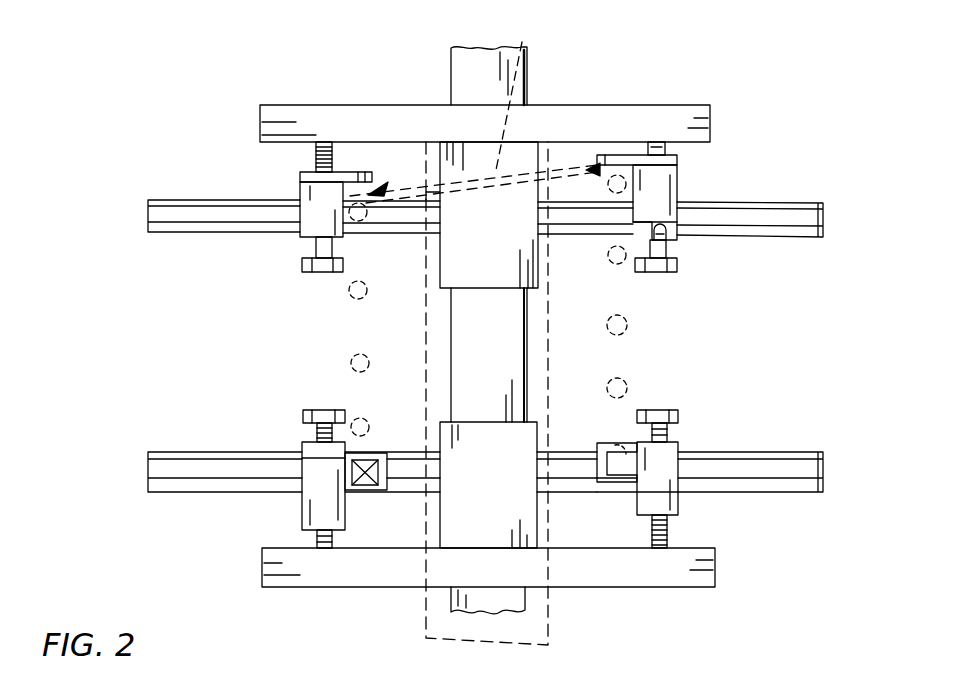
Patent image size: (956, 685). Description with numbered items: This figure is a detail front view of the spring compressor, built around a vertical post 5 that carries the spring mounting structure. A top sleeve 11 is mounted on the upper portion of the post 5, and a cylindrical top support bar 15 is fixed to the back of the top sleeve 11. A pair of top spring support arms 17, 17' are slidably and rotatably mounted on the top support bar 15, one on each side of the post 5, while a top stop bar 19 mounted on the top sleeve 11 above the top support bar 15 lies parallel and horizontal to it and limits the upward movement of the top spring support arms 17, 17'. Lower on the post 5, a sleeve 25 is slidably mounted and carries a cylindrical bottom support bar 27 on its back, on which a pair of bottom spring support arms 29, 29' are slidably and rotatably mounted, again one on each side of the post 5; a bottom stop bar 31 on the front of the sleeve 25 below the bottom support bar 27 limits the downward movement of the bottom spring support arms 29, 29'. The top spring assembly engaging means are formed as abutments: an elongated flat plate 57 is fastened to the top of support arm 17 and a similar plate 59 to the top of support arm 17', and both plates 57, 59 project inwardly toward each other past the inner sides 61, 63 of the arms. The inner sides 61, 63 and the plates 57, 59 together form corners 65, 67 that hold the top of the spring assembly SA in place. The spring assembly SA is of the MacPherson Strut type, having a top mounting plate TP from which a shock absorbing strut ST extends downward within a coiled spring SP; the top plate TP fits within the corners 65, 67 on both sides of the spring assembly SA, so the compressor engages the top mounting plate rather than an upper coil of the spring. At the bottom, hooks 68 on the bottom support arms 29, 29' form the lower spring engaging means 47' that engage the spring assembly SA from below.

The vertical post 5 is at (532, 62).
The top mounting plate TP is at (522, 31).
The top stop bar 19 is at (433, 105).
The bottom stop bar 31 is at (715, 578).
The top sleeve 11 is at (430, 272).
The sleeve 25 is at (433, 535).
The shock absorbing strut ST is at (553, 370).
The top support bar 15 is at (240, 233).
The bottom support bar 27 is at (225, 452).
The lower spring engaging means 47' is at (629, 553).
The top spring support arm 17 is at (278, 207).
The top spring support arm 17' is at (702, 207).
The plate 59 is at (620, 158).
The inner side 63 is at (633, 215).
The plate 57 is at (382, 184).
The corner 65 is at (388, 186).
The corner 67 is at (598, 165).
The inner side 61 is at (350, 232).
The spring assembly SA is at (350, 366).
The coiled spring SP is at (628, 320).
The bottom spring support arm 29 is at (274, 479).
The bottom spring support arm 29' is at (704, 479).
The hooks 68 is at (385, 455).